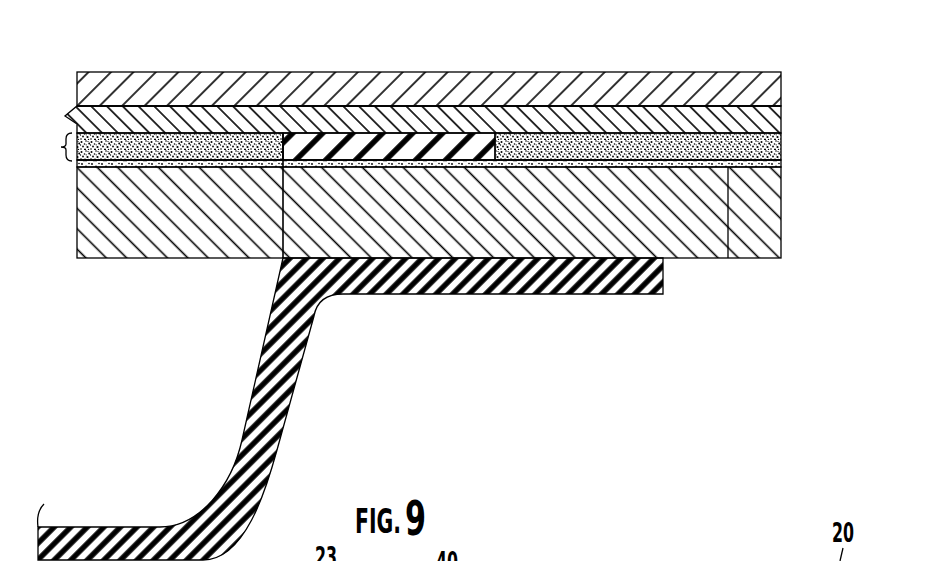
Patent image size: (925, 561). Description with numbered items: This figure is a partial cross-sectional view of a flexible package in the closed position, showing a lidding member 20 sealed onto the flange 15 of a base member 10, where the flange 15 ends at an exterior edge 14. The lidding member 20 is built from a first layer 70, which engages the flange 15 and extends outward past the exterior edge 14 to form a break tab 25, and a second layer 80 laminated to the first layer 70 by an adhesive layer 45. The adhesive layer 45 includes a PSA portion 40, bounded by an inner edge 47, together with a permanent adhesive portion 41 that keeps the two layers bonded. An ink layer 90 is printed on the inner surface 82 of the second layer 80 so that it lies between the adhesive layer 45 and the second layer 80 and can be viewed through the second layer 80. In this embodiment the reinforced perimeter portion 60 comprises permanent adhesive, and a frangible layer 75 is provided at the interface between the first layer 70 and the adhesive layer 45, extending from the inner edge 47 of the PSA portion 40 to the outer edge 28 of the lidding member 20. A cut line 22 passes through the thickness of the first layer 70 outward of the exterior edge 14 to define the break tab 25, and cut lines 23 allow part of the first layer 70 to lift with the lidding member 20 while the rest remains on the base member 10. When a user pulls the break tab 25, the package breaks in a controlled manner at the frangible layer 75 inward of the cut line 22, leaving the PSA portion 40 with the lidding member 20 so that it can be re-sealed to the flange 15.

The base member 10 is at (365, 409).
The exterior edge 14 is at (664, 275).
The flange 15 is at (470, 288).
The lidding member 20 is at (447, 159).
The cut line 22 is at (728, 258).
The cut lines 23 is at (283, 133).
The break tab 25 is at (757, 272).
The outer edge 28 is at (781, 157).
The PSA portion 40 is at (427, 142).
The permanent adhesive portion 41 is at (178, 146).
The adhesive layer 45 is at (62, 148).
The inner edge 47 is at (283, 134).
The perimeter portion 60 is at (770, 149).
The first layer 70 is at (784, 167).
The frangible layer 75 is at (781, 164).
The second layer 80 is at (784, 72).
The inner surface 82 is at (636, 113).
The ink layer 90 is at (781, 118).